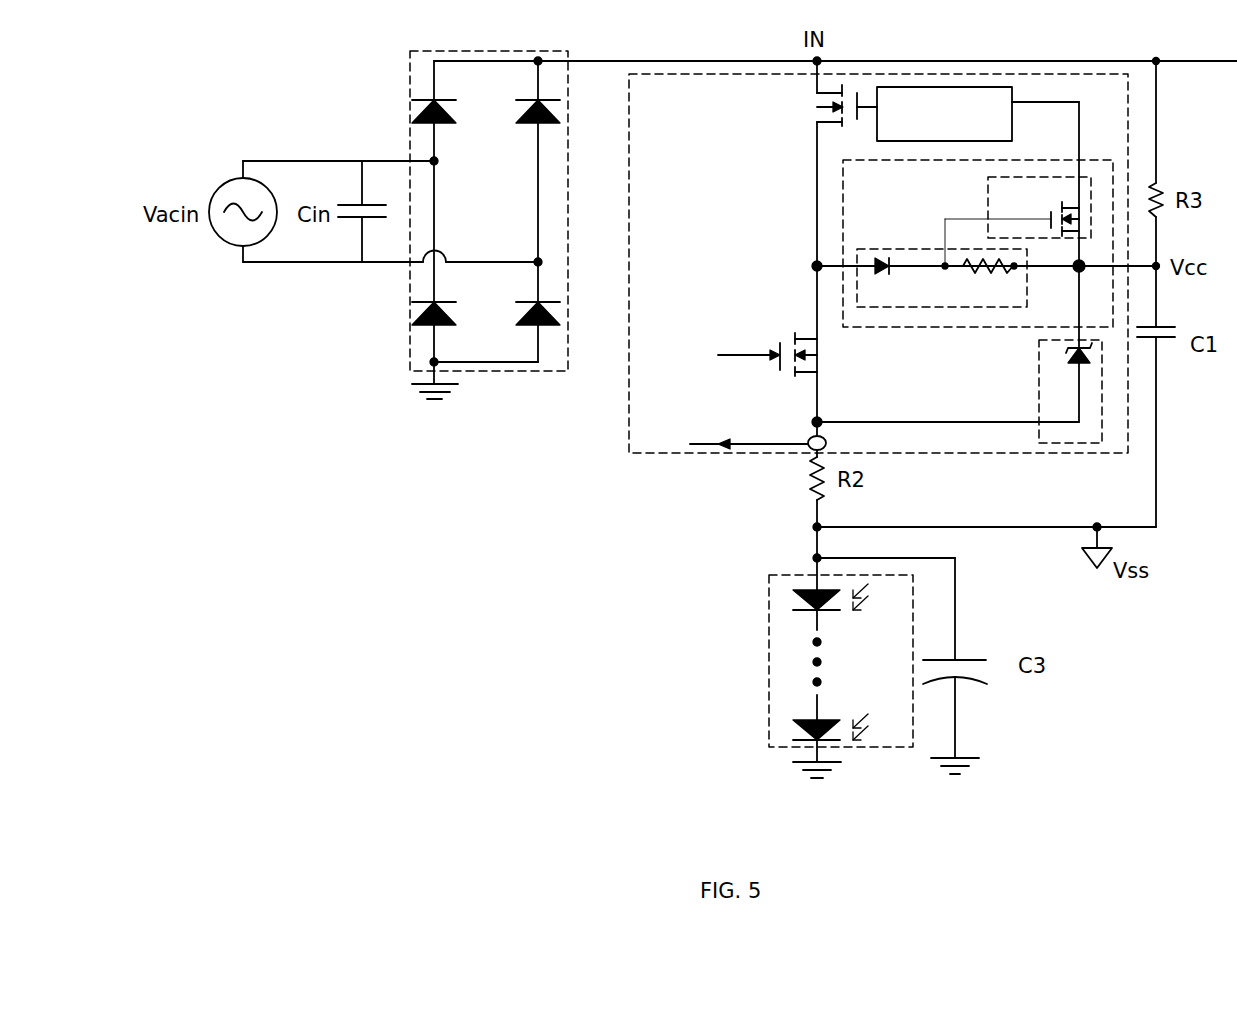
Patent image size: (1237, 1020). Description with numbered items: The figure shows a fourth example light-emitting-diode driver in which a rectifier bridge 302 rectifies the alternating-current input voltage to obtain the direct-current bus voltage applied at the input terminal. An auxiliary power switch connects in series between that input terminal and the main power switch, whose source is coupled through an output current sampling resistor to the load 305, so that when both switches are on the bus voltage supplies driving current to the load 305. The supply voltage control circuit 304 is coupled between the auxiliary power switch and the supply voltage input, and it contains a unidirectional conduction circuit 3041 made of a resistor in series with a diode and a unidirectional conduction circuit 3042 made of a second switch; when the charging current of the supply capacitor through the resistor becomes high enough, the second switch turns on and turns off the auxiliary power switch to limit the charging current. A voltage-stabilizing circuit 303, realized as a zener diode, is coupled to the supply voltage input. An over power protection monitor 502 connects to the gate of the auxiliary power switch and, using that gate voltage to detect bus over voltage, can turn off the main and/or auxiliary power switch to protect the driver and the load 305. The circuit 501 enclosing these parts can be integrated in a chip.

The rectifier bridge 302 is at (566, 372).
The voltage-stabilizing circuit 303 is at (1040, 408).
The supply voltage control circuit 304 is at (942, 328).
The unidirectional conduction circuit 3041 is at (917, 250).
The unidirectional conduction circuit 3042 is at (988, 203).
The load 305 is at (769, 598).
The circuit 501 is at (682, 454).
The over power protection monitor 502 is at (962, 124).